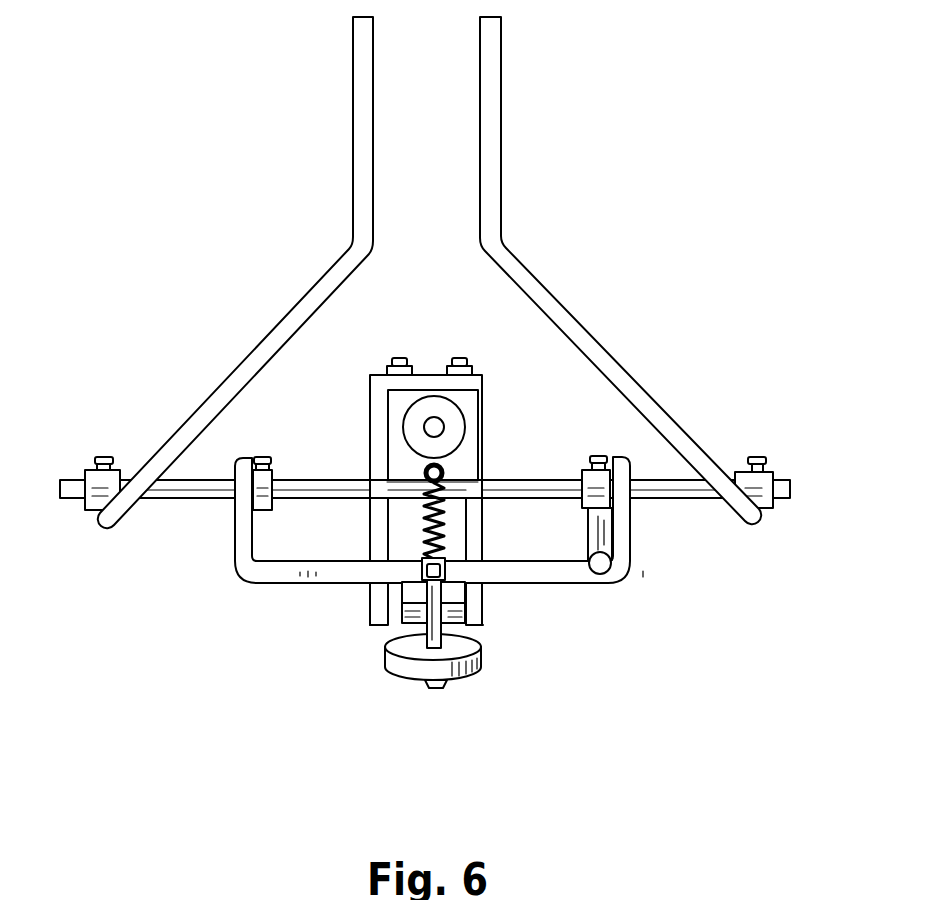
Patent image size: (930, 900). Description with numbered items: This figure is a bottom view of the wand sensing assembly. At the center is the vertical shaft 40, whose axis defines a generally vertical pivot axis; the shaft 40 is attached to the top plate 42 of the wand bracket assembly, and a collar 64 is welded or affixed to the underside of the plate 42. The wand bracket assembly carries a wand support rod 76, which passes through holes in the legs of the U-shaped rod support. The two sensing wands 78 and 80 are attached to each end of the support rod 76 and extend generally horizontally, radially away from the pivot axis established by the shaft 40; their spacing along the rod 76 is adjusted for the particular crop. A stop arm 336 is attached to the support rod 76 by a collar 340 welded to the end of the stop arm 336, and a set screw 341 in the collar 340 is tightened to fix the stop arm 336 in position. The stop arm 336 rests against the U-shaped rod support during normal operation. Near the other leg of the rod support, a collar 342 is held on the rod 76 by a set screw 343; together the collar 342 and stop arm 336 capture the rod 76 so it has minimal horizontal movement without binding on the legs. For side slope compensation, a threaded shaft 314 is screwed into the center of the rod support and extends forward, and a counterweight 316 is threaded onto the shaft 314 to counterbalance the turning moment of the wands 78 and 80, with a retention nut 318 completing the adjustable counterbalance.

The sensing wand 78 is at (357, 164).
The sensing wand 80 is at (499, 165).
The vertical shaft 40 is at (434, 427).
The collar 64 is at (455, 429).
The top plate 42 is at (468, 448).
The set screw 341 is at (598, 468).
The set screw 343 is at (262, 465).
The wand support rod 76 is at (165, 492).
The collar 342 is at (263, 508).
The collar 340 is at (603, 538).
The stop arm 336 is at (610, 500).
The threaded shaft 314 is at (440, 628).
The counterweight 316 is at (467, 676).
The retention nut 318 is at (428, 688).